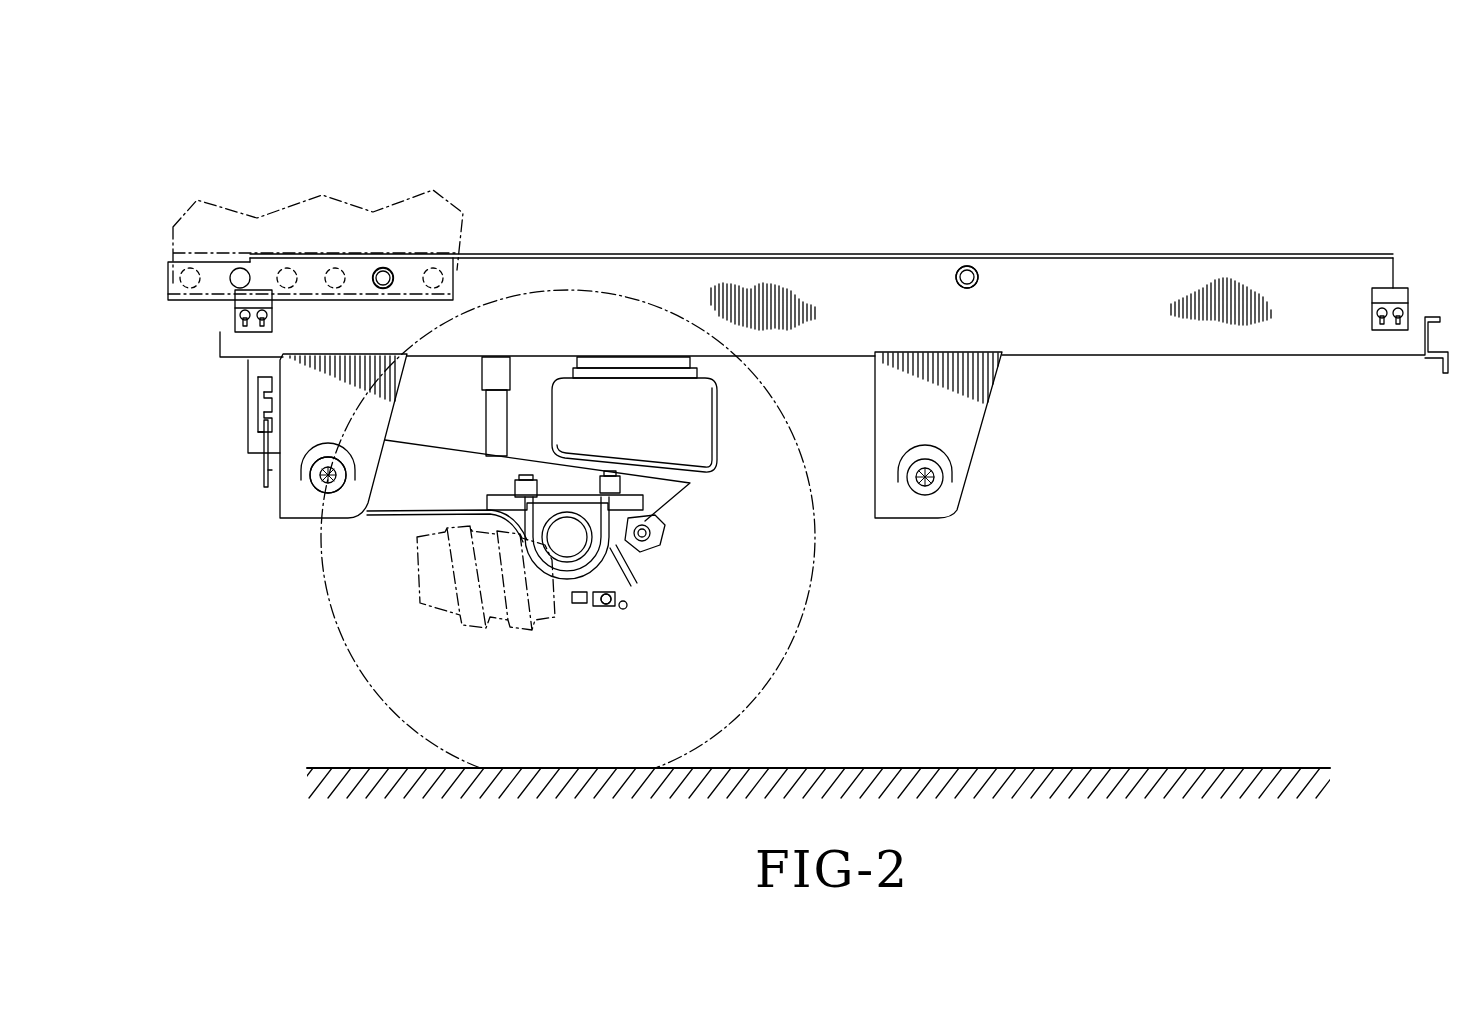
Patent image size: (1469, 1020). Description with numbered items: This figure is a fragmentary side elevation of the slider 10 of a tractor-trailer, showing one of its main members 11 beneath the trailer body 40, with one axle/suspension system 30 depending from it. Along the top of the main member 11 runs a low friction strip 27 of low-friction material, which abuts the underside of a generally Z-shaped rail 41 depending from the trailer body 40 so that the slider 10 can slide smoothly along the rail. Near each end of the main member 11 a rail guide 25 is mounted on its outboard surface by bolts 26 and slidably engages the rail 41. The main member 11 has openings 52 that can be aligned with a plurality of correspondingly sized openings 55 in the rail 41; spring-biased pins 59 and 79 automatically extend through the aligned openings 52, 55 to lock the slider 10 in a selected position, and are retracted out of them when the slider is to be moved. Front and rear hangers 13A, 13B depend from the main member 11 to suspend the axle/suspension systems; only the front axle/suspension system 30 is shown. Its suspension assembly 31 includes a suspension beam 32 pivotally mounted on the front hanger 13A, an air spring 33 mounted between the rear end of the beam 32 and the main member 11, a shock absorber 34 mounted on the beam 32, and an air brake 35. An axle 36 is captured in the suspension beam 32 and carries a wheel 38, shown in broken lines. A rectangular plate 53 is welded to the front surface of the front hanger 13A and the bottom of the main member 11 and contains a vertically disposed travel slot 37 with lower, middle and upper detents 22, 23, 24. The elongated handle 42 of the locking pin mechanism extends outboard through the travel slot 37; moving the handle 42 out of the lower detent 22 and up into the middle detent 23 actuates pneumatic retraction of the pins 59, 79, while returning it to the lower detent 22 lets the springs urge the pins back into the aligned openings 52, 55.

The slider 10 is at (827, 237).
The main member 11 is at (1235, 336).
The front hanger 13A is at (279, 516).
The rear hanger 13B is at (955, 498).
The lower detent 22 is at (258, 430).
The middle detent 23 is at (263, 411).
The upper detent 24 is at (263, 380).
The rail guide 25 is at (253, 328).
The bolt 26 is at (243, 316).
The low friction strip 27 is at (663, 257).
The axle/suspension system 30 is at (366, 514).
The suspension assembly 31 is at (403, 513).
The suspension beam 32 is at (437, 472).
The air spring 33 is at (678, 430).
The shock absorber 34 is at (497, 375).
The air brake 35 is at (433, 580).
The axle 36 is at (570, 542).
The travel slot 37 is at (257, 398).
The wheel 38 is at (790, 650).
The trailer body 40 is at (339, 198).
The rail 41 is at (228, 255).
The handle 42 is at (265, 473).
The main member opening 52 is at (388, 286).
The plate 53 is at (257, 450).
The rail opening 55 is at (178, 280).
The pin 59 is at (386, 272).
The pin 79 is at (970, 266).